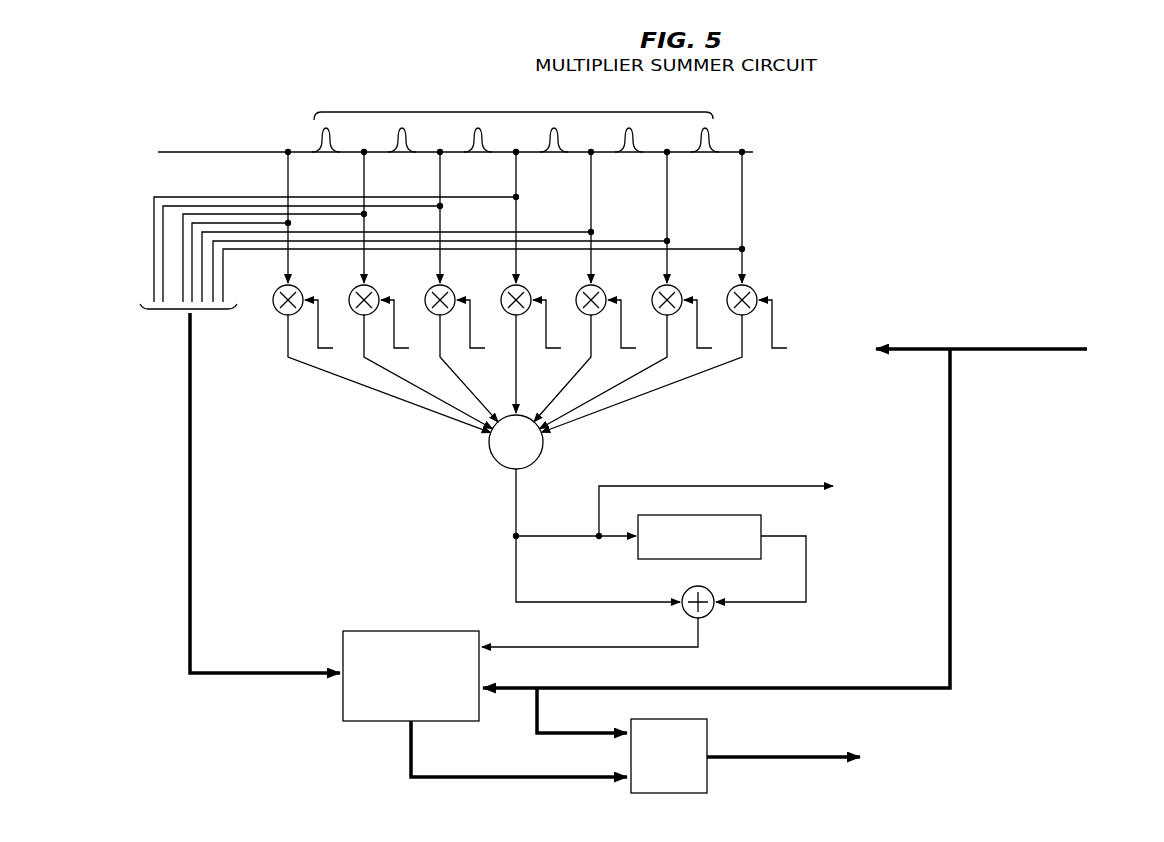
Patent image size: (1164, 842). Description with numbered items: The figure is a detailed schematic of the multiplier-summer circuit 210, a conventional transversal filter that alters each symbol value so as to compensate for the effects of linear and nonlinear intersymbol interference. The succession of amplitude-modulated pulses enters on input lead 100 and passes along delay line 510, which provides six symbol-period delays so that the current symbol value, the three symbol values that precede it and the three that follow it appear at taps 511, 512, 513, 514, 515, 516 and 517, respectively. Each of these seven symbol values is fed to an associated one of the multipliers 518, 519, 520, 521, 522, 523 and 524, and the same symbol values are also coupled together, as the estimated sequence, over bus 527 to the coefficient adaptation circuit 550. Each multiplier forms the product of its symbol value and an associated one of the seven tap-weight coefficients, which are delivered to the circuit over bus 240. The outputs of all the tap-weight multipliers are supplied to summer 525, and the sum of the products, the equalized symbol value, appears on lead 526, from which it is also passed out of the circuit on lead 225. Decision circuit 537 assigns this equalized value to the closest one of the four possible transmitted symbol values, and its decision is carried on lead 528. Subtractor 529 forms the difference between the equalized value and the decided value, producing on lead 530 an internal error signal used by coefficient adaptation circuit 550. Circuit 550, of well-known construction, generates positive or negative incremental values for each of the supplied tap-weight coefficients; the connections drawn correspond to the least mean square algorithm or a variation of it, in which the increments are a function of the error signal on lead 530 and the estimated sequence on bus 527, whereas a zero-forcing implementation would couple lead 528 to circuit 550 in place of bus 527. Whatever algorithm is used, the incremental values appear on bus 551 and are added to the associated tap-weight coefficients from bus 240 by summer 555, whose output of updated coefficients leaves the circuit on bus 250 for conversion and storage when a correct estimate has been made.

The multiplier-summer circuit 210 is at (232, 101).
The lead 100 input from FIG. 2 100 is at (168, 151).
The delay line 510 is at (410, 112).
The tap 511 is at (286, 151).
The tap 512 is at (365, 151).
The tap 513 is at (441, 151).
The tap 514 is at (517, 151).
The tap 515 is at (593, 151).
The tap 516 is at (669, 151).
The tap 517 is at (749, 151).
The multiplier 518 is at (277, 290).
The multiplier 519 is at (353, 290).
The multiplier 520 is at (429, 290).
The multiplier 521 is at (505, 290).
The multiplier 522 is at (580, 290).
The multiplier 523 is at (656, 290).
The multiplier 524 is at (731, 290).
The summer 525 is at (493, 458).
The lead 526 is at (515, 508).
The bus 527 is at (179, 474).
The lead 528 is at (806, 567).
The subtractor 529 is at (708, 615).
The lead 530 is at (637, 648).
The decision circuit 537 is at (643, 560).
The coefficient adaptation circuit 550 is at (401, 630).
The bus 551 is at (484, 775).
The summer 555 is at (707, 733).
The bus 240 is at (1040, 353).
The lead 225 output to FIG. 2 225 is at (815, 490).
The bus 250 is at (837, 762).